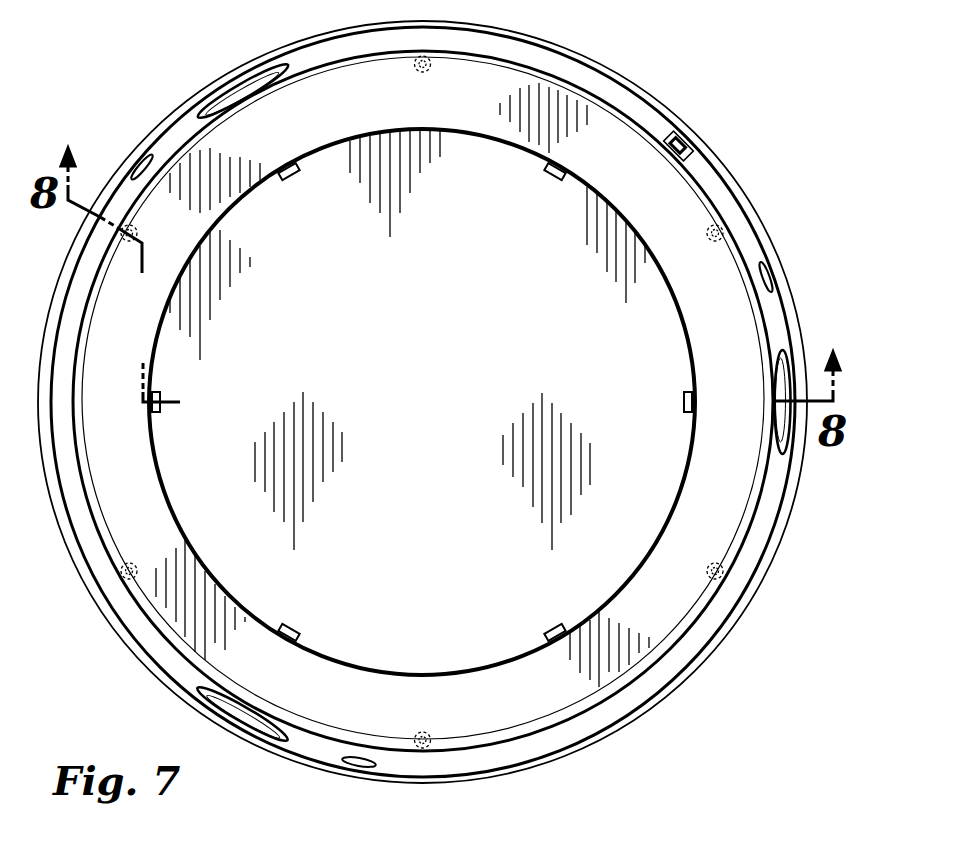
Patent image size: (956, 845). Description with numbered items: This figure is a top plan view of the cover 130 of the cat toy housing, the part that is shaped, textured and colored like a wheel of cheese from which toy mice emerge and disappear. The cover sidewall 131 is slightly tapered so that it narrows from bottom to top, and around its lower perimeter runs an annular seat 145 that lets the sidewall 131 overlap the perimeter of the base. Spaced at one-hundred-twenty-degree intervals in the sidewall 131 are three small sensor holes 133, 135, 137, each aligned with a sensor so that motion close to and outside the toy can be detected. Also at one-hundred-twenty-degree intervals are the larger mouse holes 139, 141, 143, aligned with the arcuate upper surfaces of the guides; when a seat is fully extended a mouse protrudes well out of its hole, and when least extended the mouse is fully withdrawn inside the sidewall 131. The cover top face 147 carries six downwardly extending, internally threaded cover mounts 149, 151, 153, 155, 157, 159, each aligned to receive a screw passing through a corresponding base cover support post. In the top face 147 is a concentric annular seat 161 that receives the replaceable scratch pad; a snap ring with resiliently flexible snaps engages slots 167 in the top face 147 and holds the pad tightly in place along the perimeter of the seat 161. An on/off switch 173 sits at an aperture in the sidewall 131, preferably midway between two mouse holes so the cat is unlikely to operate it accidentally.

The cover 130 is at (164, 90).
The cover sidewall 131 is at (155, 590).
The sensor hole 133 is at (772, 273).
The sensor hole 135 is at (145, 163).
The sensor hole 137 is at (358, 768).
The mouse hole 139 is at (785, 385).
The mouse hole 141 is at (258, 76).
The mouse hole 143 is at (238, 718).
The annular seat 145 is at (158, 675).
The cover top face 147 is at (537, 107).
The cover mount 149 is at (706, 227).
The cover mount 151 is at (414, 73).
The cover mount 153 is at (119, 243).
The cover mount 155 is at (131, 562).
The cover mount 157 is at (413, 733).
The cover mount 159 is at (706, 577).
The annular seat 161 is at (628, 478).
The slot 167 is at (292, 180).
The on/off switch 173 is at (690, 140).